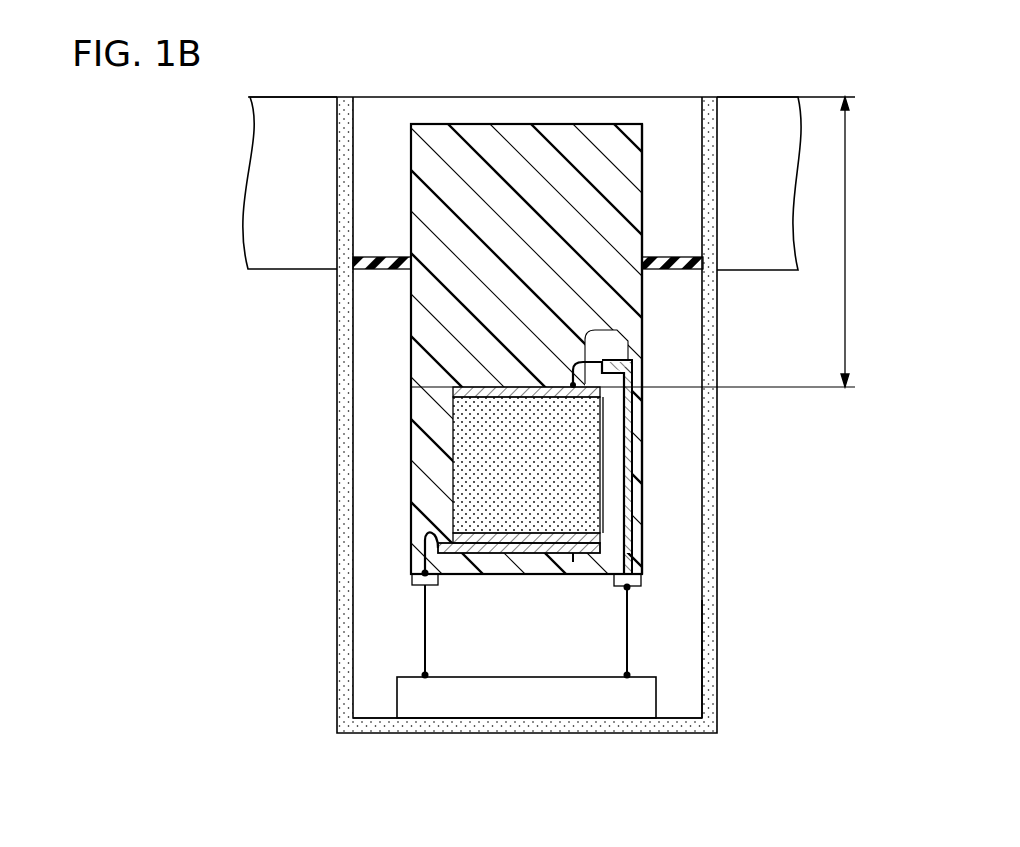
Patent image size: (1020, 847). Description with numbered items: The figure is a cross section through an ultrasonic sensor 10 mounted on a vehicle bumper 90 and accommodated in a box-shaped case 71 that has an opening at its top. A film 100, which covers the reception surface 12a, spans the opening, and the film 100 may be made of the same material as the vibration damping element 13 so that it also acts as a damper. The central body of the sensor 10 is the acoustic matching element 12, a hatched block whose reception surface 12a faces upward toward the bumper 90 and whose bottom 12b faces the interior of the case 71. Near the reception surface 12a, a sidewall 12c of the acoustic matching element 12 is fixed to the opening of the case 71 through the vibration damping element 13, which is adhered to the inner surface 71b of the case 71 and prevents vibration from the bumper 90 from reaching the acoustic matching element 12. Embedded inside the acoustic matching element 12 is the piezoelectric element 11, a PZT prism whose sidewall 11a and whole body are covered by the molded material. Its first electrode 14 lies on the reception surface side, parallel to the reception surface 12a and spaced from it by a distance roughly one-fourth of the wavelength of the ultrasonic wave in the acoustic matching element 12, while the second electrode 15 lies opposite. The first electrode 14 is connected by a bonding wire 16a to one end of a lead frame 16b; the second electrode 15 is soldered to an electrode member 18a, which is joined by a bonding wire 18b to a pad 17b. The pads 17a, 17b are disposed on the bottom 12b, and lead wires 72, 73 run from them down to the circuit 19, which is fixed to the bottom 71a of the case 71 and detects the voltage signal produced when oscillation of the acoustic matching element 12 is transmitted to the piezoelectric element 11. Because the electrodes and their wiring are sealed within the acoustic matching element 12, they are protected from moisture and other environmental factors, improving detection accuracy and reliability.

The ultrasonic sensor 10 is at (782, 71).
The piezoelectric element 11 is at (453, 467).
The sidewall of the piezoelectric element 11a is at (600, 520).
The acoustic matching element 12 is at (630, 293).
The reception surface 12a is at (547, 122).
The bottom 12b is at (520, 576).
The sidewall 12c is at (642, 163).
The vibration damping element 13 is at (385, 265).
The first electrode 14 is at (411, 388).
The second electrode 15 is at (445, 537).
The bonding wire 16a is at (617, 330).
The lead frame 16b is at (630, 440).
The pad 17a is at (642, 580).
The pad 17b is at (412, 578).
The electrode member 18a is at (573, 555).
The bonding wire 18b is at (427, 533).
The circuit 19 is at (397, 677).
The case 71 is at (708, 523).
The bottom of the case 71a is at (373, 717).
The inner surface of the case 71b is at (696, 693).
The lead wire 72 is at (628, 648).
The lead wire 73 is at (424, 619).
The bumper 90 is at (304, 106).
The film 100 is at (478, 106).